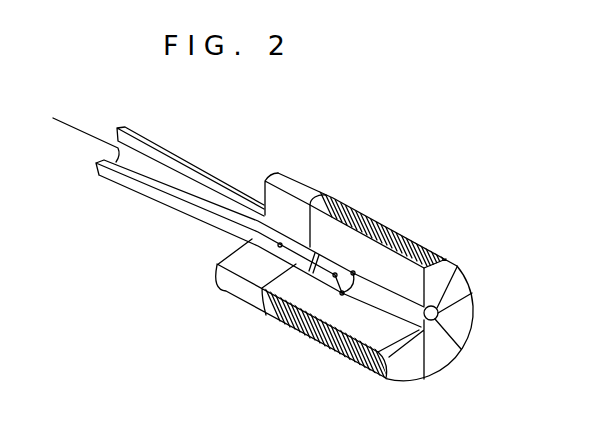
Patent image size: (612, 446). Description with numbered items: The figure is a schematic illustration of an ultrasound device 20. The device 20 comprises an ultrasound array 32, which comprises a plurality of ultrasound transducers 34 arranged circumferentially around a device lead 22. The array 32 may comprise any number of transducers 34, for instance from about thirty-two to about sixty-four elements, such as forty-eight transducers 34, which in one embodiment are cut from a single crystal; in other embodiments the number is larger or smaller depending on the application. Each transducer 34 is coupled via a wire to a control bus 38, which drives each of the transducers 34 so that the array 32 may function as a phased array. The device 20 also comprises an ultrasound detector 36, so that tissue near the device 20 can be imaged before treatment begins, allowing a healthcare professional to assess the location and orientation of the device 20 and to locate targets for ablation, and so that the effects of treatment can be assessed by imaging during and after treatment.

The ultrasound device 20 is at (409, 125).
The device lead 22 is at (193, 164).
The ultrasound array 32 is at (419, 219).
The ultrasound transducers 34 is at (457, 322).
The ultrasound detector 36 is at (300, 177).
The control bus 38 is at (78, 128).